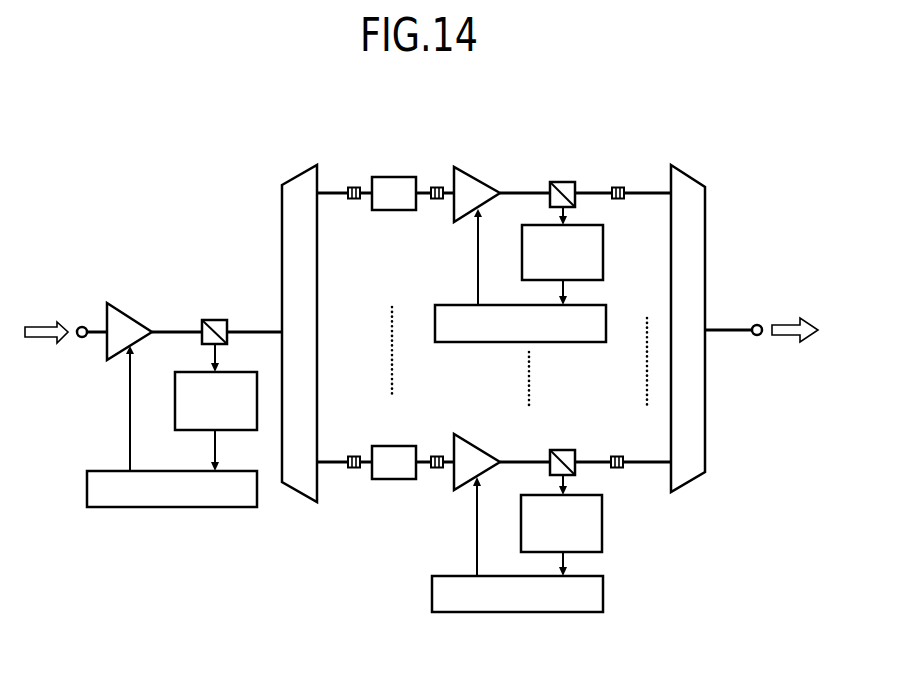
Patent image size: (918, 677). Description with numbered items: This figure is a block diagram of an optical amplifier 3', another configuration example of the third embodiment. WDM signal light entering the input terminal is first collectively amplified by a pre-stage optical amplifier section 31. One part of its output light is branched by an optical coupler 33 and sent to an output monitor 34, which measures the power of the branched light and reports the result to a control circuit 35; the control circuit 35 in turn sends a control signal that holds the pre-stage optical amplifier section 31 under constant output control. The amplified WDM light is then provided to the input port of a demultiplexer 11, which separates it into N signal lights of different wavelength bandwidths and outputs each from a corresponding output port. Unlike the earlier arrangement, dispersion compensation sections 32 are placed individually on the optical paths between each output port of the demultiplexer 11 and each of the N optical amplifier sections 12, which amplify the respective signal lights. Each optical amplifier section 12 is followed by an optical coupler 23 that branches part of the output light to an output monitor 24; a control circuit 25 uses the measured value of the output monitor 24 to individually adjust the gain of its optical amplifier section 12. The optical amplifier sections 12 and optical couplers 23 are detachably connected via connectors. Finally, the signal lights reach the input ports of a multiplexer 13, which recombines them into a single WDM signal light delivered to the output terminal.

The optical amplifier 3' is at (421, 366).
The demultiplexer 11 is at (298, 176).
The multiplexer 13 is at (697, 180).
The optical amplifier section 12 is at (479, 174).
The optical coupler 23 is at (563, 182).
The output monitor 24 is at (604, 245).
The control circuit 25 is at (606, 325).
The dispersion compensation section 32 is at (395, 177).
The pre-stage optical amplifier section 31 is at (134, 308).
The optical coupler 33 is at (219, 320).
The output monitor 34 is at (233, 372).
The control circuit 35 is at (240, 471).